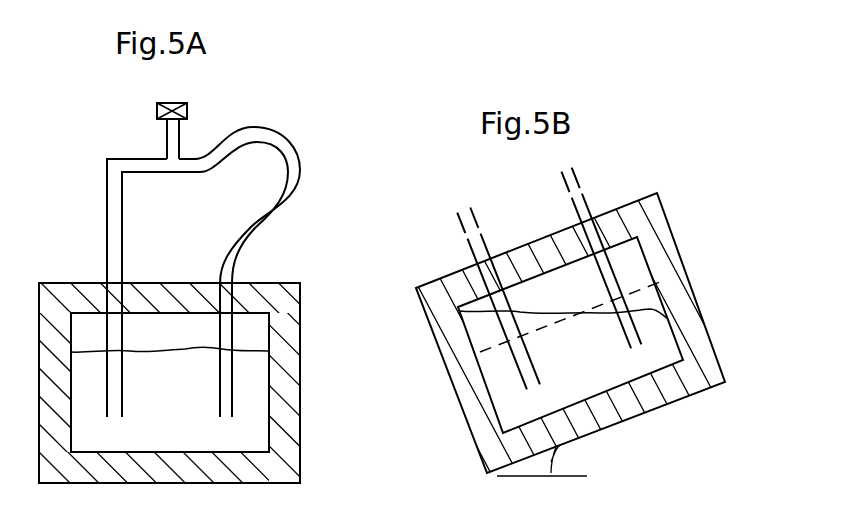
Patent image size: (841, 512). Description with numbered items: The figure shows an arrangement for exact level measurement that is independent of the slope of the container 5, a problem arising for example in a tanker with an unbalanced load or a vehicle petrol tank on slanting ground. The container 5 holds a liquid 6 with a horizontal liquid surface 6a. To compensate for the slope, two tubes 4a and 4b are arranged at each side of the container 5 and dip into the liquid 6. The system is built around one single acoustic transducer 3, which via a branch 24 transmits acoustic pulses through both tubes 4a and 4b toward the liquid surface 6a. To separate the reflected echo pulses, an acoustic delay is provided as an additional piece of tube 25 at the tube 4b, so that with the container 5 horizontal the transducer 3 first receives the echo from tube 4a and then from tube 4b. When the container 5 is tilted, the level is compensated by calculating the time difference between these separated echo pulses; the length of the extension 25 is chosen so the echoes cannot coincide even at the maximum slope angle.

In FIG. 5A, the acoustic transducer 3 is at (186, 103).
In FIG. 5A, the branch 24 is at (167, 157).
In FIG. 5A, the additional piece of tube 25 is at (300, 163).
In FIG. 5A, the tube 4a is at (107, 243).
In FIG. 5B, the tube 4a is at (480, 225).
In FIG. 5A, the tube 4b is at (233, 388).
In FIG. 5B, the tube 4b is at (586, 190).
In FIG. 5A, the container 5 is at (301, 303).
In FIG. 5B, the container 5 is at (683, 257).
In FIG. 5A, the liquid 6 is at (176, 411).
In FIG. 5B, the liquid 6 is at (580, 355).
In FIG. 5A, the horizontal liquid surface 6a is at (258, 348).
In FIG. 5B, the horizontal liquid surface 6a is at (653, 312).